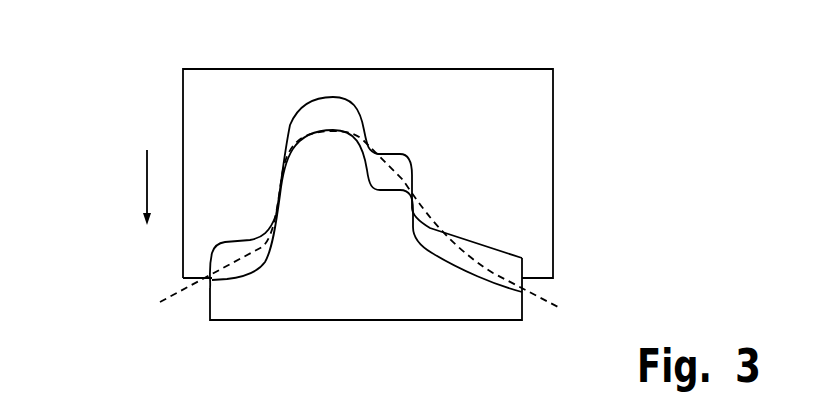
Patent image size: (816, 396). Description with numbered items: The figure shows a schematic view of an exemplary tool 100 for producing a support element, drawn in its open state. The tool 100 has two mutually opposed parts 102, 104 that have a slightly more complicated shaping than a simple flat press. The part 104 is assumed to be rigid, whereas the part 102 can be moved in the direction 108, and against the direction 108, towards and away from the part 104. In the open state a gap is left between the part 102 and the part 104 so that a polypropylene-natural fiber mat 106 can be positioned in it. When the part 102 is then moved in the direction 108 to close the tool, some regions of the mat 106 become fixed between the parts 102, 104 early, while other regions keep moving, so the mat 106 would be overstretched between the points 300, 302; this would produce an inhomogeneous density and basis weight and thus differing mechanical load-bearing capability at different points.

The tool 100 is at (170, 115).
The part 102 is at (537, 110).
The part 104 is at (487, 307).
The mat 106 is at (550, 296).
The direction 108 is at (147, 187).
The point 300 is at (373, 178).
The point 302 is at (433, 250).